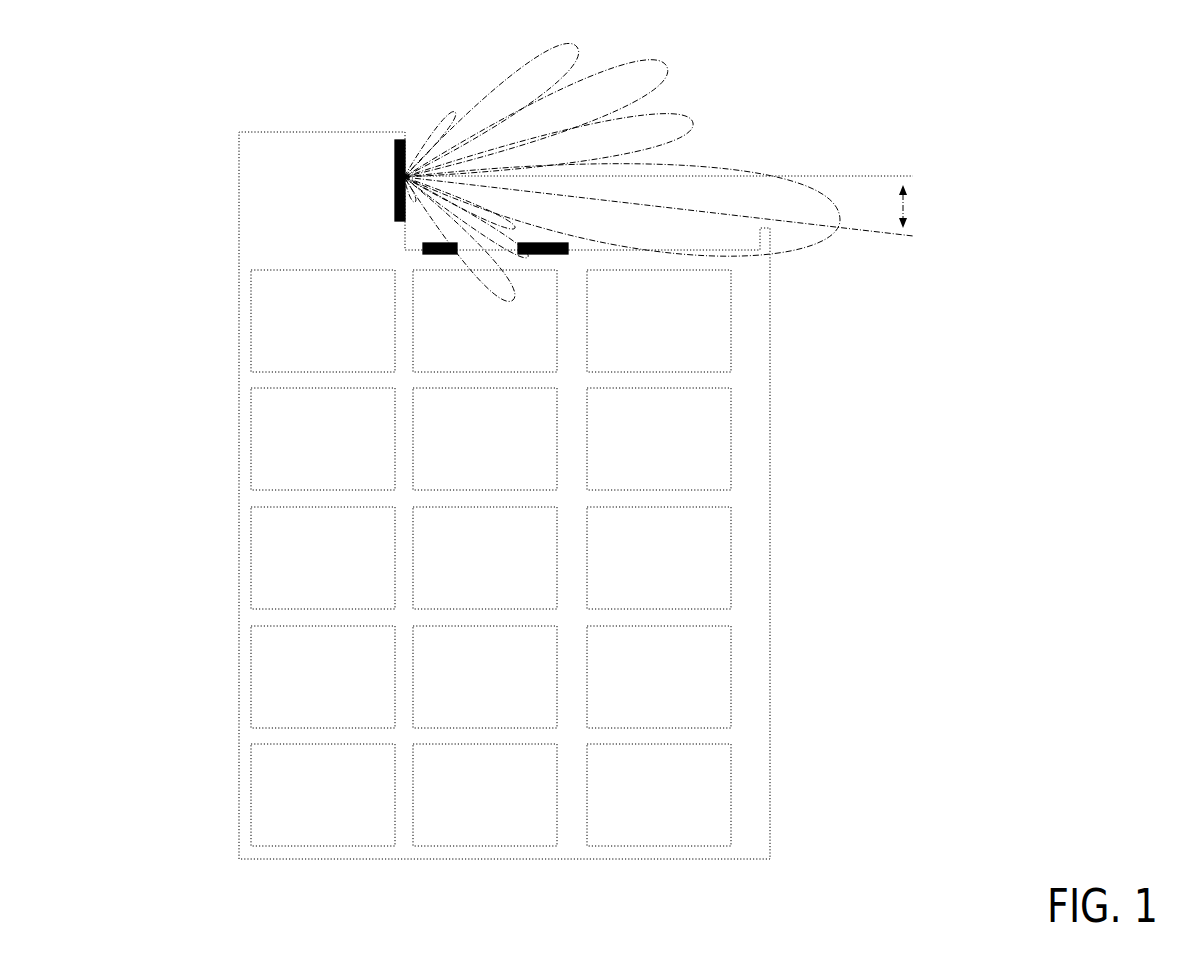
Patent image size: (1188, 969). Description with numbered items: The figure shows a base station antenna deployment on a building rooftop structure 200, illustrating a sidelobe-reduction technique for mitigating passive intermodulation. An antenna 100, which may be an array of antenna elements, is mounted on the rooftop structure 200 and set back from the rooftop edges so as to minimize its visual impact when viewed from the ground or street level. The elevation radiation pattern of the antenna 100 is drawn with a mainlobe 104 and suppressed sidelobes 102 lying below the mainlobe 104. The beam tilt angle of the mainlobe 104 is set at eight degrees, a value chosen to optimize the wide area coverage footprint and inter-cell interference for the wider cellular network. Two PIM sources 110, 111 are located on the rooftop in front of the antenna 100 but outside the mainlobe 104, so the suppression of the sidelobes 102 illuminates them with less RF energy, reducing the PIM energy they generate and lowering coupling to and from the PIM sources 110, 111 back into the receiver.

The building rooftop structure 200 is at (266, 124).
The antenna 100 is at (388, 144).
The suppressed sidelobes 102 is at (438, 208).
The mainlobe 104 is at (749, 180).
The PIM source 110 is at (400, 255).
The PIM source 111 is at (590, 255).